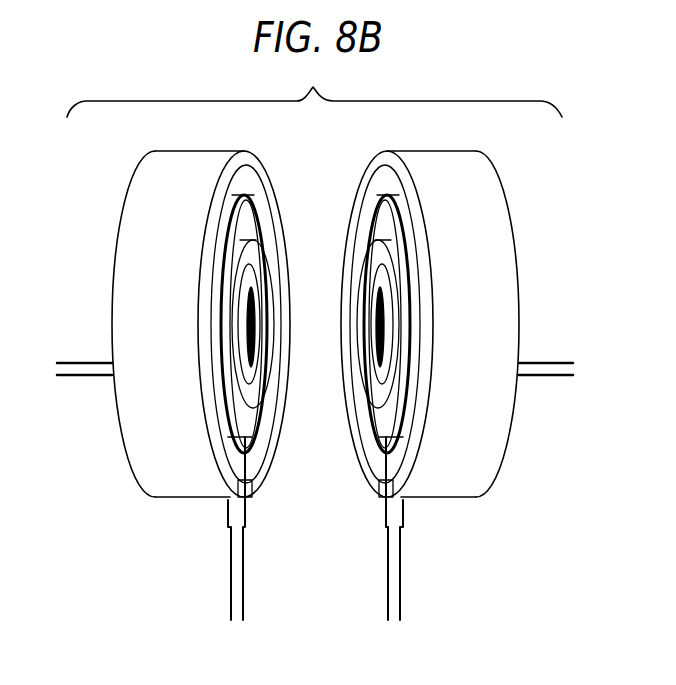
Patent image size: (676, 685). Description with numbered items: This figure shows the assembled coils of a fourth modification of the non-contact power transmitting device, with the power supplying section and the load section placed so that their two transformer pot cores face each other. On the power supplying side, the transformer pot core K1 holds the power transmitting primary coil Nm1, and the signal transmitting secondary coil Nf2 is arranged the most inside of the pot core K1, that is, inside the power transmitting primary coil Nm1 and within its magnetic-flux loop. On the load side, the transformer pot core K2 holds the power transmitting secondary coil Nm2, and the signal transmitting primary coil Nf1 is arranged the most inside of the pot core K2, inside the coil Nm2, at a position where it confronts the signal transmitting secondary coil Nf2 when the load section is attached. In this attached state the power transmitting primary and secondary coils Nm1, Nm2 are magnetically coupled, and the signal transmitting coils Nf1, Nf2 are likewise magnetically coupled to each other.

The transformer pot core K1 is at (112, 242).
The transformer pot core K2 is at (513, 240).
The signal transmitting secondary coil Nf2 is at (88, 378).
The signal transmitting primary coil Nf1 is at (540, 378).
The power transmitting primary coil Nm1 is at (228, 603).
The power transmitting secondary coil Nm2 is at (384, 603).